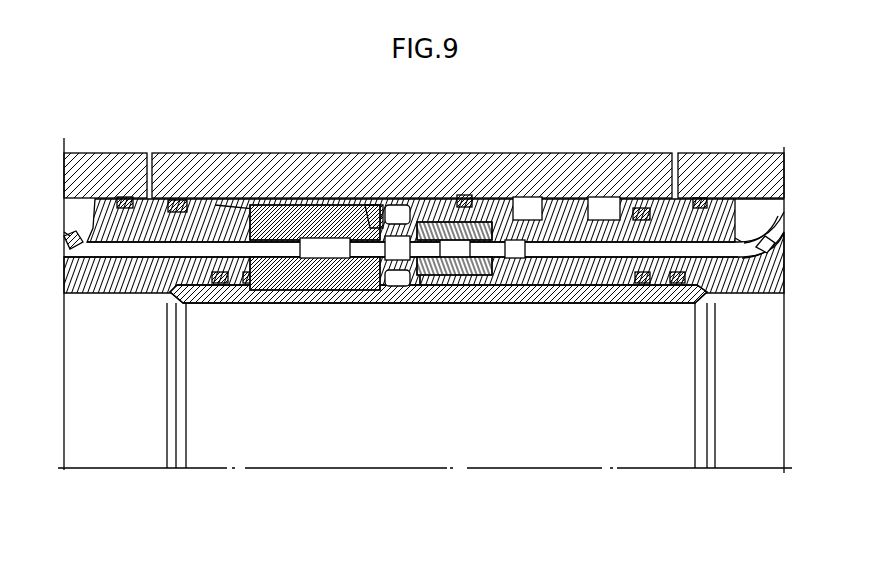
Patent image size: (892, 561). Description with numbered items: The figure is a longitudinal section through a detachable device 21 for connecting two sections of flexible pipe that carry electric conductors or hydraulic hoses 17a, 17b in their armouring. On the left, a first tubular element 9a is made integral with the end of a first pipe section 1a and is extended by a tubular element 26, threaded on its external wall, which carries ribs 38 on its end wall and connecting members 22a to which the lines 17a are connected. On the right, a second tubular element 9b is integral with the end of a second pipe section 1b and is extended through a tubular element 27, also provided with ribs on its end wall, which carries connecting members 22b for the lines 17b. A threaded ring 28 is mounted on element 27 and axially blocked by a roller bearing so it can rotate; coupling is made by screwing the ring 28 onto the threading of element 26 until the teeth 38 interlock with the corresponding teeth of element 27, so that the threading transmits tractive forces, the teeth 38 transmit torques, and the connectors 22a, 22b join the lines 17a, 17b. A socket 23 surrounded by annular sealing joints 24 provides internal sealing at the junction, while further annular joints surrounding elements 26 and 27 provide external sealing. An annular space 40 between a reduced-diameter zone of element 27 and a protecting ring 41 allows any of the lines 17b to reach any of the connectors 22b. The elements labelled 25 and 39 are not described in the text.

The first pipe section 1a is at (74, 450).
The second pipe section 1b is at (776, 440).
The first tubular element 9a is at (118, 282).
The second tubular element 9b is at (773, 290).
The electric conductors or hydraulic hoses 17a is at (70, 197).
The electric conductors or hydraulic hoses 17b is at (763, 252).
The detachable device 21 is at (452, 147).
The connecting members 22a is at (362, 283).
The connecting members 22b is at (396, 280).
The socket 23 is at (538, 287).
The annular sealing joints 24 is at (218, 280).
The recesses 25 is at (527, 210).
The tubular element 26 is at (270, 225).
The tubular element 27 is at (497, 265).
The threaded ring 28 is at (377, 180).
The ribs 38 is at (402, 207).
The upper seals 39 is at (178, 207).
The annular space 40 is at (742, 210).
The protecting ring 41 is at (112, 175).